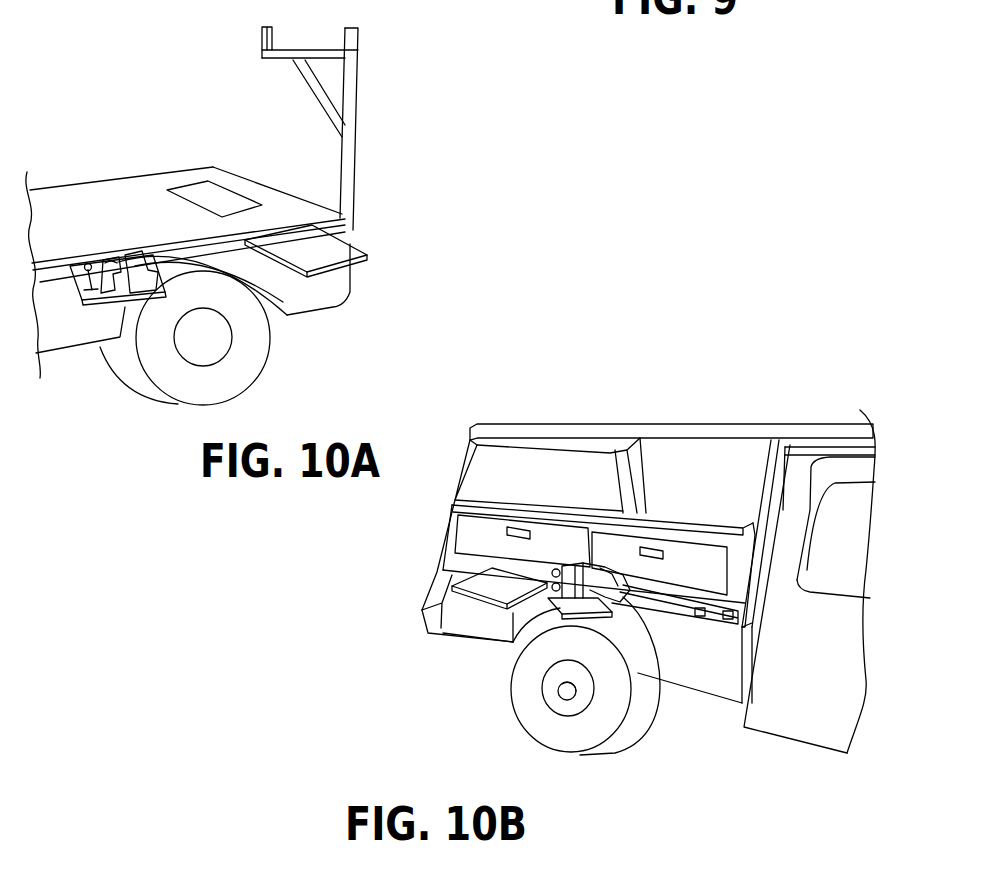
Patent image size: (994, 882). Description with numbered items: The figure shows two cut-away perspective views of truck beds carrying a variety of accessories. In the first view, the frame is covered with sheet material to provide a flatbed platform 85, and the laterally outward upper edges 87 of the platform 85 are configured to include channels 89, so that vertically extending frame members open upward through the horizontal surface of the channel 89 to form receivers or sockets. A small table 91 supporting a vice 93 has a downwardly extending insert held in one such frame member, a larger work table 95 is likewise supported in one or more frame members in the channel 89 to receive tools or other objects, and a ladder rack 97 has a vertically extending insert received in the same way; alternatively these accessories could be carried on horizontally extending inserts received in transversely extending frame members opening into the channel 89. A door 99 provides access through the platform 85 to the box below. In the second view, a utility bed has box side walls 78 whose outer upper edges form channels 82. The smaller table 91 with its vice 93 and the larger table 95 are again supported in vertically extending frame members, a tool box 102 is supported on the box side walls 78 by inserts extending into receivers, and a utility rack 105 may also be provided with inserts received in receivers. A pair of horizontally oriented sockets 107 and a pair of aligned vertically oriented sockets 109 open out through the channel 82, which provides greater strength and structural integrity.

In FIG. 10B, the box side walls 78 is at (443, 587).
In FIG. 10B, the channels 82 is at (665, 600).
In FIG. 10A, the platform 85 is at (75, 213).
In FIG. 10A, the laterally outward upper edges 87 is at (210, 242).
In FIG. 10A, the channels 89 is at (284, 313).
In FIG. 10A, the small table 91 is at (78, 267).
In FIG. 10B, the small table 91 is at (560, 608).
In FIG. 10A, the vice 93 is at (140, 283).
In FIG. 10B, the vice 93 is at (630, 598).
In FIG. 10A, the larger work table 95 is at (333, 253).
In FIG. 10B, the larger work table 95 is at (493, 587).
In FIG. 10A, the ladder rack 97 is at (355, 88).
In FIG. 10A, the door 99 is at (212, 193).
In FIG. 10B, the tool box 102 is at (555, 545).
In FIG. 10B, the utility rack 105 is at (512, 430).
In FIG. 10B, the horizontally oriented receivers or sockets 107 is at (703, 607).
In FIG. 10B, the vertically oriented receivers or sockets 109 is at (696, 617).